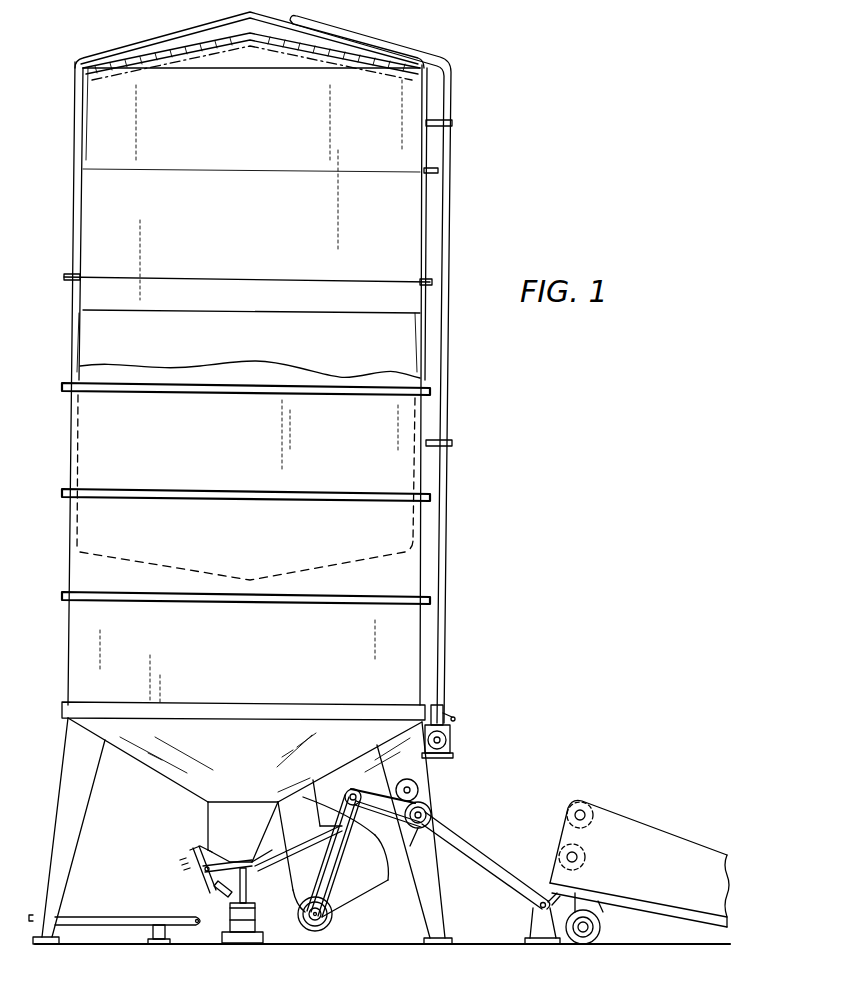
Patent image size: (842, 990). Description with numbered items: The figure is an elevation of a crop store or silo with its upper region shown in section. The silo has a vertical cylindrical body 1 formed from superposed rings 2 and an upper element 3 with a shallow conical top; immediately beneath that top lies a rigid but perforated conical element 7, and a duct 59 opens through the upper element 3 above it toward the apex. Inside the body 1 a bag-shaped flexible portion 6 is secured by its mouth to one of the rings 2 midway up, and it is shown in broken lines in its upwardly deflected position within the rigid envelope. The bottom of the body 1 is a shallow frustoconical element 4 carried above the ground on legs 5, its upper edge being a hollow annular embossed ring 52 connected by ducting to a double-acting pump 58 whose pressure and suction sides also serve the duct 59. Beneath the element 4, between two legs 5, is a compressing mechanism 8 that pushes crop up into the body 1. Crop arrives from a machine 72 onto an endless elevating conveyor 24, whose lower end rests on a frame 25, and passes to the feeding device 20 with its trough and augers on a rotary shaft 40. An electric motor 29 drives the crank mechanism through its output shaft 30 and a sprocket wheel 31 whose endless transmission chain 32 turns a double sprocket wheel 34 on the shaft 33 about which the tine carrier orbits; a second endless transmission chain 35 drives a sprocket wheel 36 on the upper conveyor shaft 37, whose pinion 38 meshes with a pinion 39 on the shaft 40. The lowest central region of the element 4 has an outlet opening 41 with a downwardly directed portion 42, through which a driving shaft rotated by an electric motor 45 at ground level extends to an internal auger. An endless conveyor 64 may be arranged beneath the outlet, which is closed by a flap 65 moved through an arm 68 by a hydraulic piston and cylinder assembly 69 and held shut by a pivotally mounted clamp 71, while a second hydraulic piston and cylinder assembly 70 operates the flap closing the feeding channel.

The cylindrical body 1 is at (64, 626).
The superposed rings 2 is at (88, 194).
The upper element 3 is at (90, 89).
The frustoconical element 4 is at (156, 764).
The legs 5 is at (62, 786).
The bag-shaped flexible portion 6 is at (181, 322).
The perforated conical element 7 is at (187, 48).
The compressing mechanism 8 is at (386, 882).
The feeding device 20 is at (516, 852).
The endless elevating conveyor 24 is at (512, 886).
The frame 25 is at (540, 923).
The electric motor 29 is at (308, 926).
The output shaft 30 is at (316, 925).
The sprocket wheel 31 is at (322, 912).
The endless transmission chain 32 is at (312, 870).
The shaft 33 is at (358, 792).
The double sprocket wheel 34 is at (326, 801).
The endless transmission chain 35 is at (388, 852).
The sprocket wheel 36 is at (420, 846).
The shaft 37 is at (432, 816).
The pinion 38 is at (432, 806).
The pinion 39 is at (428, 800).
The rotary shaft 40 is at (407, 788).
The outlet opening 41 is at (203, 810).
The downwardly directed portion 42 is at (238, 797).
The electric motor 45 is at (235, 918).
The annular embossed ring 52 is at (212, 709).
The double-acting pump 58 is at (453, 746).
The duct 59 is at (440, 56).
The endless conveyor 64 is at (118, 898).
The flap 65 is at (197, 876).
The arm 68 is at (206, 884).
The hydraulic piston and cylinder assembly 69 is at (243, 862).
The hydraulic piston and cylinder assembly 70 is at (248, 880).
The clamp 71 is at (191, 852).
The machine 72 is at (612, 817).